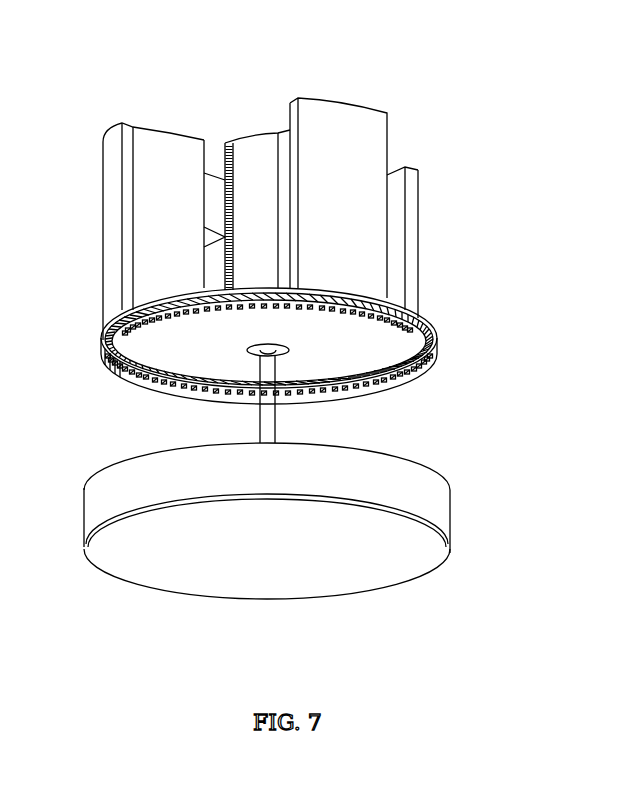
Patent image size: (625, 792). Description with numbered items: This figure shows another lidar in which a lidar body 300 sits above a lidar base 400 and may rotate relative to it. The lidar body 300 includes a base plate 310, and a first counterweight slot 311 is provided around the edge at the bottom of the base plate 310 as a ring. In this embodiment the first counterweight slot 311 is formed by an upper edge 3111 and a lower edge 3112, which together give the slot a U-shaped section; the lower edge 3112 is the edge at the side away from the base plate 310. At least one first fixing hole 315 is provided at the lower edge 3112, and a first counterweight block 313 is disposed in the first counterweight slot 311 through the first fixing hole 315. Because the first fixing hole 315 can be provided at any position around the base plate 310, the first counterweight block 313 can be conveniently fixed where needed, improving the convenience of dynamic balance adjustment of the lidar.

The lidar body 300 is at (392, 75).
The base plate 310 is at (185, 348).
The first counterweight slot 311 is at (428, 326).
The upper edge 3111 is at (433, 334).
The lower edge 3112 is at (436, 342).
The first counterweight block 313 is at (387, 298).
The first fixing hole 315 is at (437, 353).
The lidar base 400 is at (440, 517).